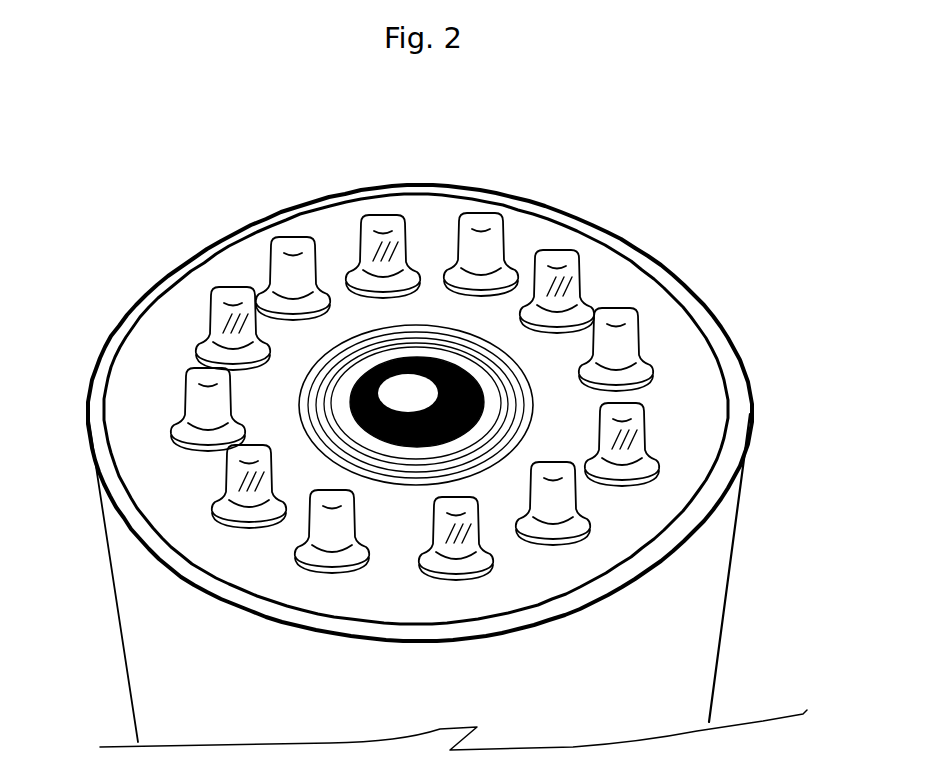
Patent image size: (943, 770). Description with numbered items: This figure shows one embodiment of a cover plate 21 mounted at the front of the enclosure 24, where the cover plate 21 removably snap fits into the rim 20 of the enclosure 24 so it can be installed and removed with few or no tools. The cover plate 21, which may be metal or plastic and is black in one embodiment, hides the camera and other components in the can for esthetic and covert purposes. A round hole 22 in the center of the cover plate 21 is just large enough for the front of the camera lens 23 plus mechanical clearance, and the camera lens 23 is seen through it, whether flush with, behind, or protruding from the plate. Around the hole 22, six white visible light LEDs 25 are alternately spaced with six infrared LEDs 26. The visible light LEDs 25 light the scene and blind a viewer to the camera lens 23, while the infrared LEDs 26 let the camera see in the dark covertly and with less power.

The rim 20 is at (614, 216).
The cover plate 21 is at (612, 283).
The hole 22 is at (533, 395).
The camera lens 23 is at (402, 397).
The enclosure 24 is at (653, 648).
The visible light LEDs 25 is at (203, 408).
The infrared LEDs 26 is at (218, 320).